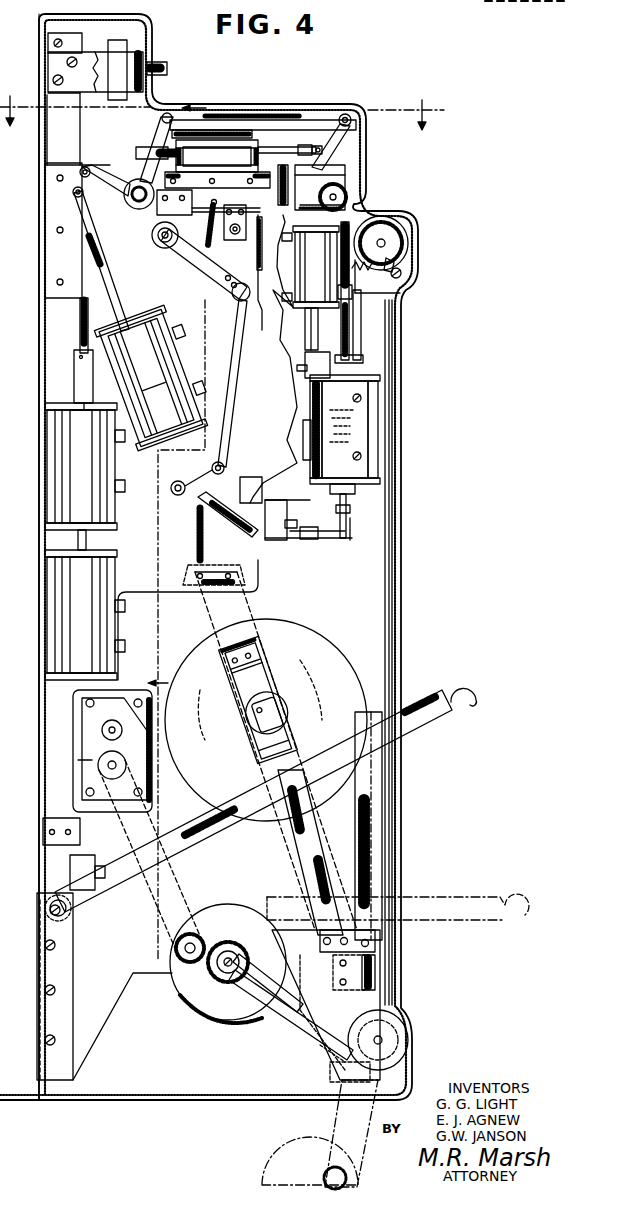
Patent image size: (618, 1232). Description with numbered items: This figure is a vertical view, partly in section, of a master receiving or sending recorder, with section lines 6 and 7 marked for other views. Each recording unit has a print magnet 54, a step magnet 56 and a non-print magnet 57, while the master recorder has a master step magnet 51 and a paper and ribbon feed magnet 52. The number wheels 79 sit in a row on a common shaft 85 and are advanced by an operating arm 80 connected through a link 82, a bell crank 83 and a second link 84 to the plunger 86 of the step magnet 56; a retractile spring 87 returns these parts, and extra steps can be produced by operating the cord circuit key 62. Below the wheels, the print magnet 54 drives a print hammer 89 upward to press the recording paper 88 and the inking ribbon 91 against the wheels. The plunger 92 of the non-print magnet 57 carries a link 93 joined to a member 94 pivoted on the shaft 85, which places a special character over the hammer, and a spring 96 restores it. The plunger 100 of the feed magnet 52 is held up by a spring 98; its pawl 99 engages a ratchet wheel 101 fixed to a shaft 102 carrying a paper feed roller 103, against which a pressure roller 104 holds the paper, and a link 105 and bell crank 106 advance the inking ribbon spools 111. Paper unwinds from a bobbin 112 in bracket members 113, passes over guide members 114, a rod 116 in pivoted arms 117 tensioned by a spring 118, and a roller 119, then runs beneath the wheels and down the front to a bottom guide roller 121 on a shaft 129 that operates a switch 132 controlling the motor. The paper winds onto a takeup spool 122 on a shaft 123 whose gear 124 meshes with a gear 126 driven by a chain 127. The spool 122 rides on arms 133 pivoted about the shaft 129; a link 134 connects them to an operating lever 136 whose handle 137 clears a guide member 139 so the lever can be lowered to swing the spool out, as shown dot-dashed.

The section line 6- 6 is at (222, 104).
The section line 7- 7 is at (172, 384).
The master step magnet 51 is at (86, 617).
The master paper and ribbon feed magnet 52 is at (349, 400).
The print magnet 54 is at (313, 292).
The step magnet 56 is at (90, 483).
The non-print magnet 57 is at (230, 166).
The cord circuit key 62 is at (168, 68).
The number wheels 79 is at (340, 203).
The operating arm 80 is at (338, 142).
The link 82 is at (266, 121).
The bell crank 83 is at (110, 188).
The second link 84 is at (88, 248).
The common shaft 85 is at (338, 194).
The plunger 86 is at (88, 323).
The retractile spring 87 is at (236, 131).
The recording paper 88 is at (366, 208).
The print hammer 89 is at (287, 238).
The inking ribbon 91 is at (305, 375).
The plunger 92 is at (272, 148).
The link 93 is at (308, 150).
The member 94 is at (320, 170).
The spring 96 is at (155, 146).
The spring 98 is at (350, 290).
The pawl 99 is at (385, 240).
The plunger 100 is at (350, 357).
The ratchet wheel 101 is at (397, 242).
The shaft 102 is at (400, 226).
The paper feed roller 103 is at (398, 259).
The pressure roller 104 is at (401, 273).
The link 105 is at (338, 512).
The bell crank 106 is at (344, 538).
The inking ribbon spool 111 is at (306, 421).
The bobbin 112 is at (290, 720).
The bracket members 113 is at (250, 613).
The guide members 114 is at (180, 477).
The rod 116 is at (240, 301).
The pivoted arms 117 is at (192, 255).
The spring 118 is at (222, 236).
The roller 119 is at (158, 237).
The bottom guide roller 121 is at (396, 1052).
The takeup spool 122 is at (180, 990).
The shaft 123 is at (245, 968).
The gear 124 is at (228, 940).
The gear 126 is at (168, 922).
The chain 127 is at (150, 810).
The shaft 129 is at (384, 1040).
The switch 132 is at (385, 975).
The arms 133 is at (270, 1035).
The link 134 is at (300, 880).
The operating lever 136 is at (254, 800).
The handle 137 is at (478, 690).
The guide member 139 is at (372, 777).